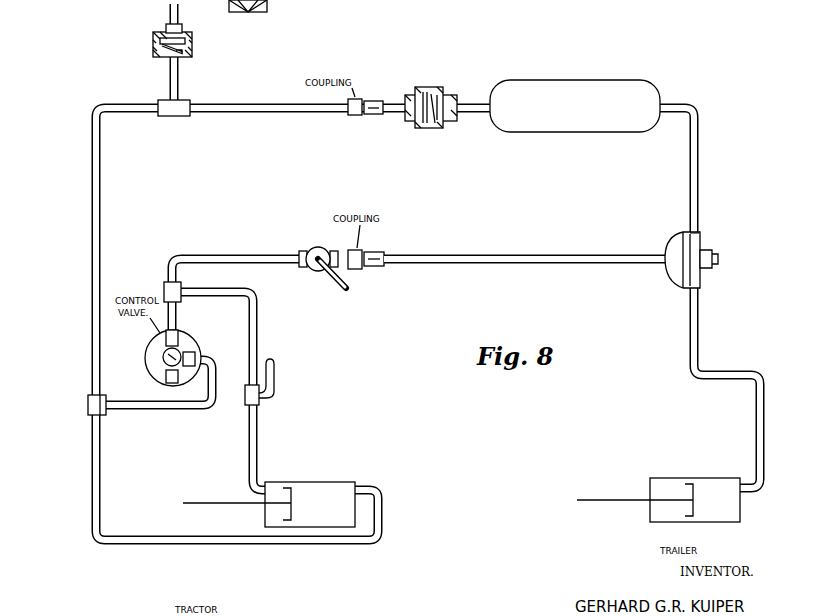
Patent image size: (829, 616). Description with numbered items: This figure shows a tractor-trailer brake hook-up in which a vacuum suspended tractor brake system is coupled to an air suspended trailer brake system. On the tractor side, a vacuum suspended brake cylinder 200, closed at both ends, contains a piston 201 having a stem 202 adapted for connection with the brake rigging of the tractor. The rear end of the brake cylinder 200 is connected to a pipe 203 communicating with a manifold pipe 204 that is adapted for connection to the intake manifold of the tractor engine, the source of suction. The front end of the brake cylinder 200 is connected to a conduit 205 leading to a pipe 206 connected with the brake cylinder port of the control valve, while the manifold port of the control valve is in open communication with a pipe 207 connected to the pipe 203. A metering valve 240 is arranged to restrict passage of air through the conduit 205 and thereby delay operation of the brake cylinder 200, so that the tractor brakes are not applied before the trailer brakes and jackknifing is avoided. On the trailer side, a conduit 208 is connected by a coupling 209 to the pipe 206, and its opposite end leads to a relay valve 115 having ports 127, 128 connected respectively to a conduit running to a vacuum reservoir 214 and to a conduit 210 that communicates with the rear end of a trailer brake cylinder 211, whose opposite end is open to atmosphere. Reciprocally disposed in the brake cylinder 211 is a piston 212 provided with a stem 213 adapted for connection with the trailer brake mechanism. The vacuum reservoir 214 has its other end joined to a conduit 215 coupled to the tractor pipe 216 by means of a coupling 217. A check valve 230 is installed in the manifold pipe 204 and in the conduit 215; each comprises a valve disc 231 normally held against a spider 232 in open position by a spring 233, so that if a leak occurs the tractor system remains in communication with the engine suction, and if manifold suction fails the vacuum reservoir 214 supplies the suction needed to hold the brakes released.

The relay valve 115 is at (684, 240).
The port 127 is at (696, 240).
The port 128 is at (702, 276).
The brake cylinder 200 is at (330, 515).
The piston 201 is at (286, 522).
The stem 202 is at (193, 502).
The pipe 203 is at (100, 177).
The manifold pipe 204 is at (182, 82).
The conduit 205 is at (250, 444).
The pipe 206 is at (210, 255).
The pipe 207 is at (155, 409).
The conduit 208 is at (504, 264).
The coupling 209 is at (698, 160).
The conduit 210 is at (699, 330).
The brake cylinder 211 is at (730, 507).
The piston 212 is at (690, 510).
The stem 213 is at (590, 502).
The vacuum reservoir 214 is at (600, 80).
The conduit 215 is at (470, 100).
The tractor pipe 216 is at (280, 113).
The coupling 217 is at (353, 115).
The check valve 230 is at (298, 89).
The valve disc 231 is at (188, 44).
The spider 232 is at (190, 35).
The spring 233 is at (190, 52).
The metering valve 240 is at (260, 404).